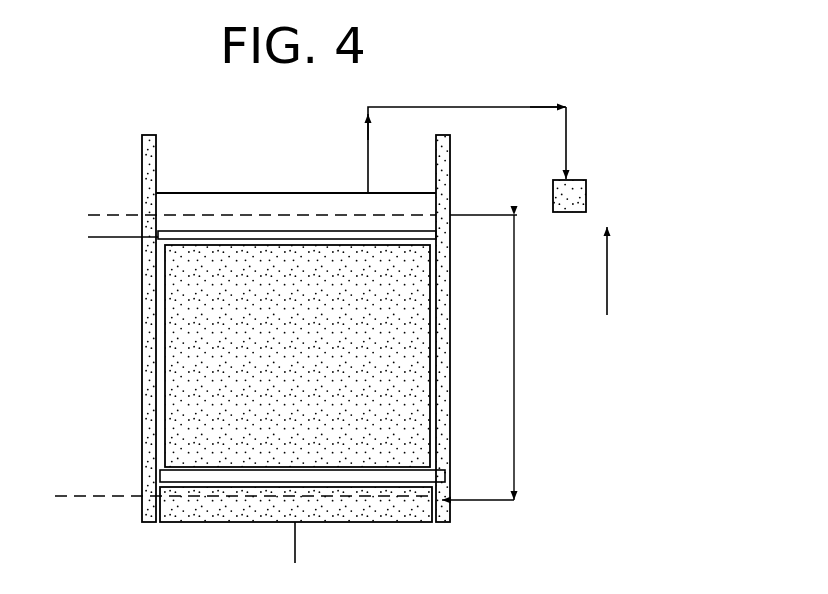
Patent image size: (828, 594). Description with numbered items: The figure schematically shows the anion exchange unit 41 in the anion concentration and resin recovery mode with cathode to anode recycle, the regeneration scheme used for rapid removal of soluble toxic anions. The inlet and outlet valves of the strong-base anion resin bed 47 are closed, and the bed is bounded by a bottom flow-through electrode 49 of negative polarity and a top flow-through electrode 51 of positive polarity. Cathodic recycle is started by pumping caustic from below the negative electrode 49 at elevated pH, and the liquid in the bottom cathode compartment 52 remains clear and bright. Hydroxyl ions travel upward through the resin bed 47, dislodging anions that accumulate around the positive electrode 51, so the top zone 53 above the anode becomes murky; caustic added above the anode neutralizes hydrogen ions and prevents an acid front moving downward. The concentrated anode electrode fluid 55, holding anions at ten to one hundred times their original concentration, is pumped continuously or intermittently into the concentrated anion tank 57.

The anion exchange unit 41 is at (672, 216).
The strong-base anion resin bed 47 is at (413, 352).
The bottom flow-through electrode 49 is at (90, 495).
The top flow-through electrode 51 is at (117, 215).
The bottom cathode compartment 52 is at (402, 515).
The top zone 53 is at (426, 208).
The concentrated anode electrode fluid 55 is at (477, 107).
The concentrated anion tank 57 is at (586, 193).